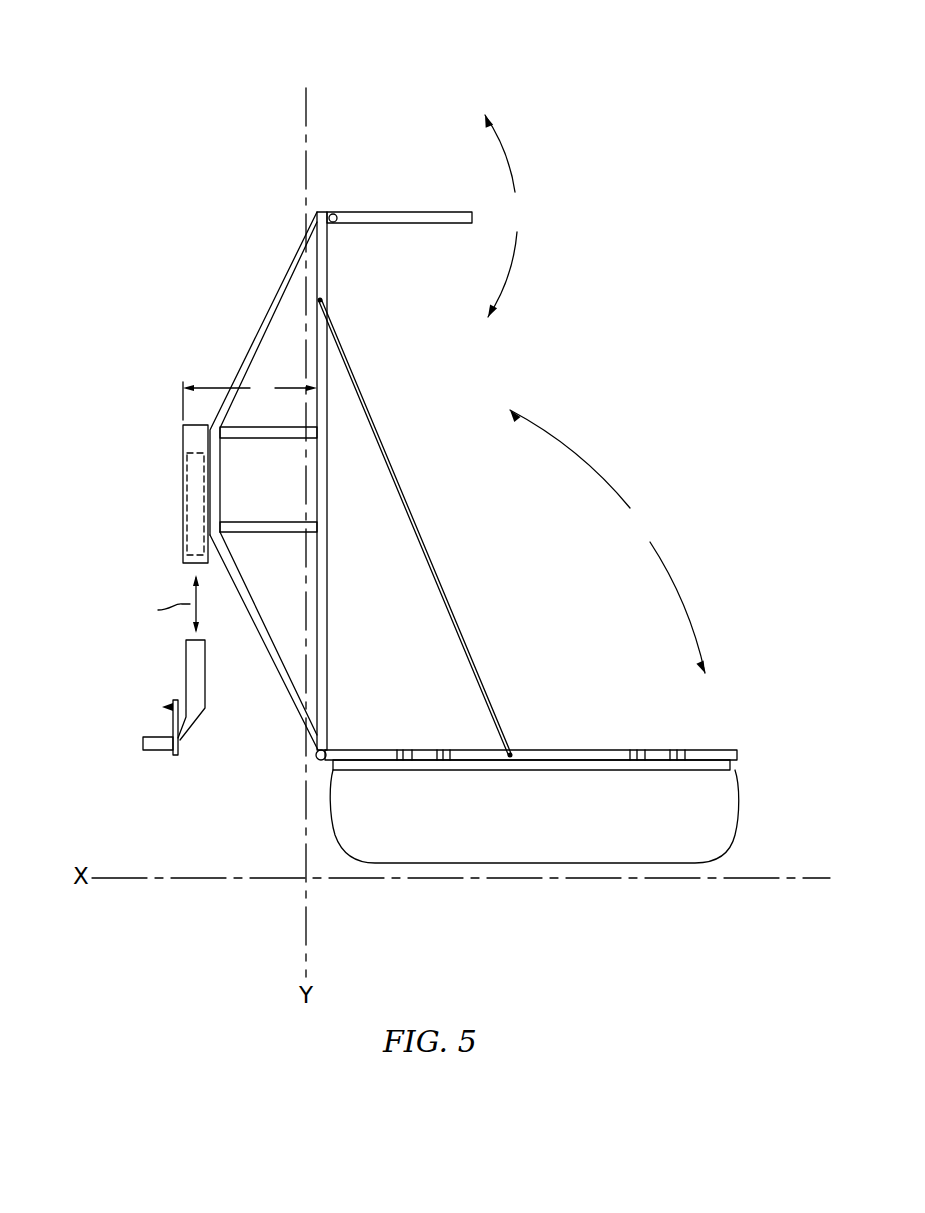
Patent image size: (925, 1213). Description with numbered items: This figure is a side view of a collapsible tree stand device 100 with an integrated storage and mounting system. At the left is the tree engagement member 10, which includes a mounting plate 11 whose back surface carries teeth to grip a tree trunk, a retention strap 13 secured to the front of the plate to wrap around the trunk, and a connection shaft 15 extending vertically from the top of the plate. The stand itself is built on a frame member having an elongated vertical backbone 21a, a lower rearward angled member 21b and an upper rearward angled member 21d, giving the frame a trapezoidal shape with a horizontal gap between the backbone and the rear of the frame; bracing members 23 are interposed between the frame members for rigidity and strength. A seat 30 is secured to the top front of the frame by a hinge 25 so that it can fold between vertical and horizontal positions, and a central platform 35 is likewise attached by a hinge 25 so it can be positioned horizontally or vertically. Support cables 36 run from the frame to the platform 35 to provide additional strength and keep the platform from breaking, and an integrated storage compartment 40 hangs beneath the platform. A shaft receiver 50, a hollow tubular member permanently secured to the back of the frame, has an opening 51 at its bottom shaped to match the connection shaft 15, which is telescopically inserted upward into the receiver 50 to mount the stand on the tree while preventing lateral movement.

The collapsible tree stand device 100 is at (177, 90).
The tree engagement member 10 is at (157, 722).
The mounting plate 11 is at (178, 748).
The retention strap 13 is at (153, 775).
The connection shaft 15 is at (190, 660).
The elongated vertical backbone 21a is at (322, 618).
The lower rearward angled member 21b is at (267, 643).
The upper rearward angled member 21d is at (275, 307).
The bracing members 23 is at (218, 480).
The hinges 25 is at (334, 211).
The seat 30 is at (430, 214).
The central platform 35 is at (722, 750).
The support cables 36 is at (447, 593).
The storage compartments 40 is at (538, 834).
The shaft receiver 50 is at (183, 475).
The opening 51 is at (185, 545).